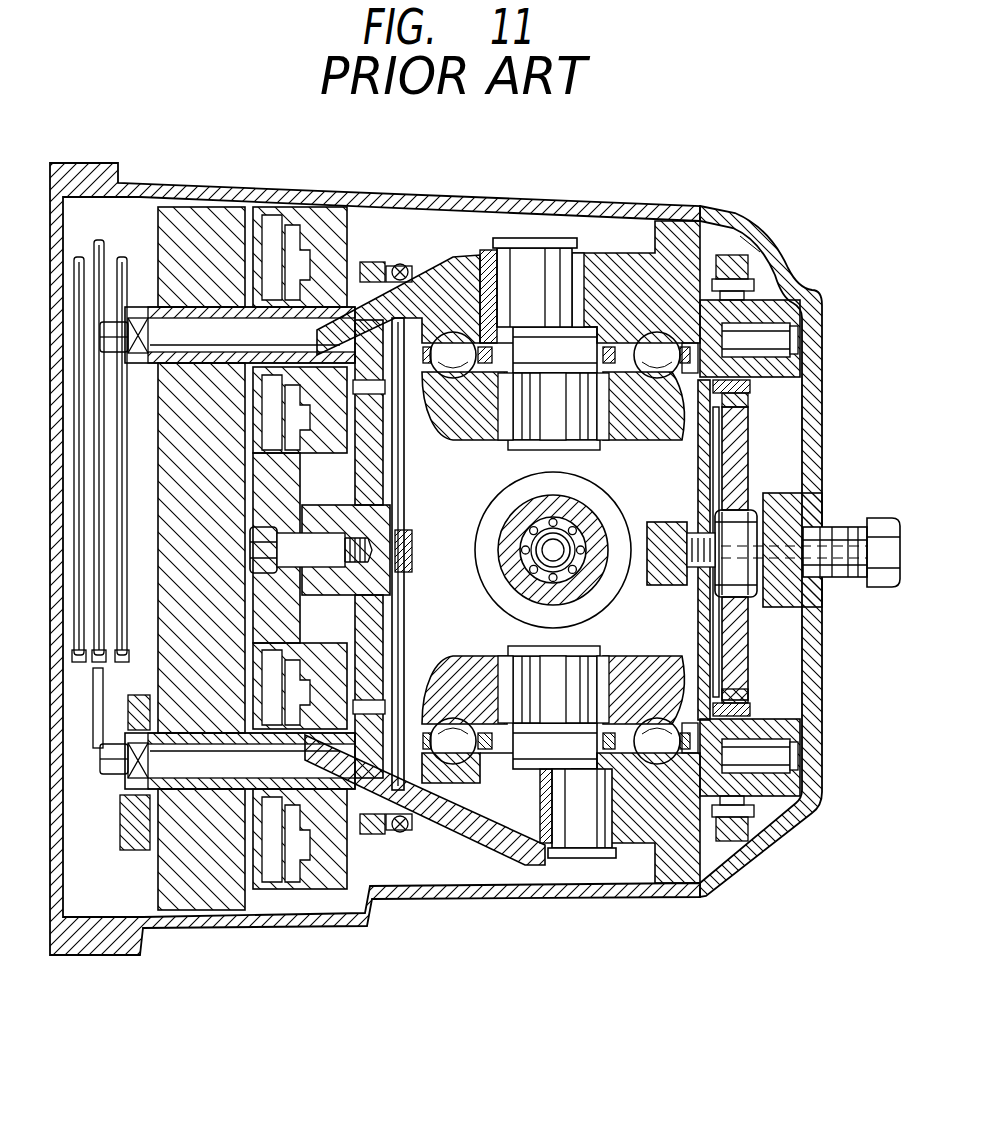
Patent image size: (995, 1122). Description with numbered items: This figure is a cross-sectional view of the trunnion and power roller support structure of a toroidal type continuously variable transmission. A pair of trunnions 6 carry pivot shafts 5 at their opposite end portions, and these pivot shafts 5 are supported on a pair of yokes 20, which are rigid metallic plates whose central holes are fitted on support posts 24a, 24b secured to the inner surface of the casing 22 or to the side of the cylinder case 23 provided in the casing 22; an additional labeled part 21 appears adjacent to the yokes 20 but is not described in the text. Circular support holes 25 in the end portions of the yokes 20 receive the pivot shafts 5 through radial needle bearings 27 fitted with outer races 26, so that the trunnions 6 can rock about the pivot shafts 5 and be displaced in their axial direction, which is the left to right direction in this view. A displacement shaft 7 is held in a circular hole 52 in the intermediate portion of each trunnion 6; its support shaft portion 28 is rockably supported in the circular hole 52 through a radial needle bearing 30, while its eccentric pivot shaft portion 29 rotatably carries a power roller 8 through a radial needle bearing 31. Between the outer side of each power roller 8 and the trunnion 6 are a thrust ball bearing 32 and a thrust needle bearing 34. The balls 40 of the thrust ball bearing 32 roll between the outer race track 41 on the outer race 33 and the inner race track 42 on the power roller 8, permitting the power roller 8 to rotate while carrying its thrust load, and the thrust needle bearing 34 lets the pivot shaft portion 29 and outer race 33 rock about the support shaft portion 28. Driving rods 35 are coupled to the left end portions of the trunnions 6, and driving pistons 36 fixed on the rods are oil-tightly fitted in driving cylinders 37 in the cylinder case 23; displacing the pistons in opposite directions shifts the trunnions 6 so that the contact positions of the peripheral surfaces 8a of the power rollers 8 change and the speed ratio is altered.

The pivot shaft 5 is at (615, 541).
The trunnion 6 is at (788, 218).
The displacement shaft 7 is at (606, 164).
The power roller 8 is at (769, 548).
The peripheral surface 8a is at (793, 552).
The yoke 20 is at (615, 549).
The yoke plate 21 is at (477, 545).
The casing 22 is at (765, 551).
The cylinder case 23 is at (375, 577).
The support post 24a is at (773, 560).
The support post 24b is at (362, 550).
The support hole 25 is at (603, 546).
The outer race 26 is at (604, 556).
The radial needle bearing 27 is at (582, 578).
The support shaft portion 28 is at (554, 550).
The pivot shaft portion 29 is at (592, 548).
The radial needle bearing 30 is at (579, 563).
The radial needle bearing 31 is at (489, 548).
The thrust ball bearing 32 is at (634, 548).
The outer race 33 is at (669, 564).
The thrust needle bearing 34 is at (662, 552).
The driving rod 35 is at (227, 605).
The driving piston 36 is at (296, 555).
The driving cylinder 37 is at (234, 550).
The ball 40 is at (641, 551).
The outer race track 41 is at (689, 561).
The inner race track 42 is at (524, 567).
The circular hole 52 is at (516, 542).